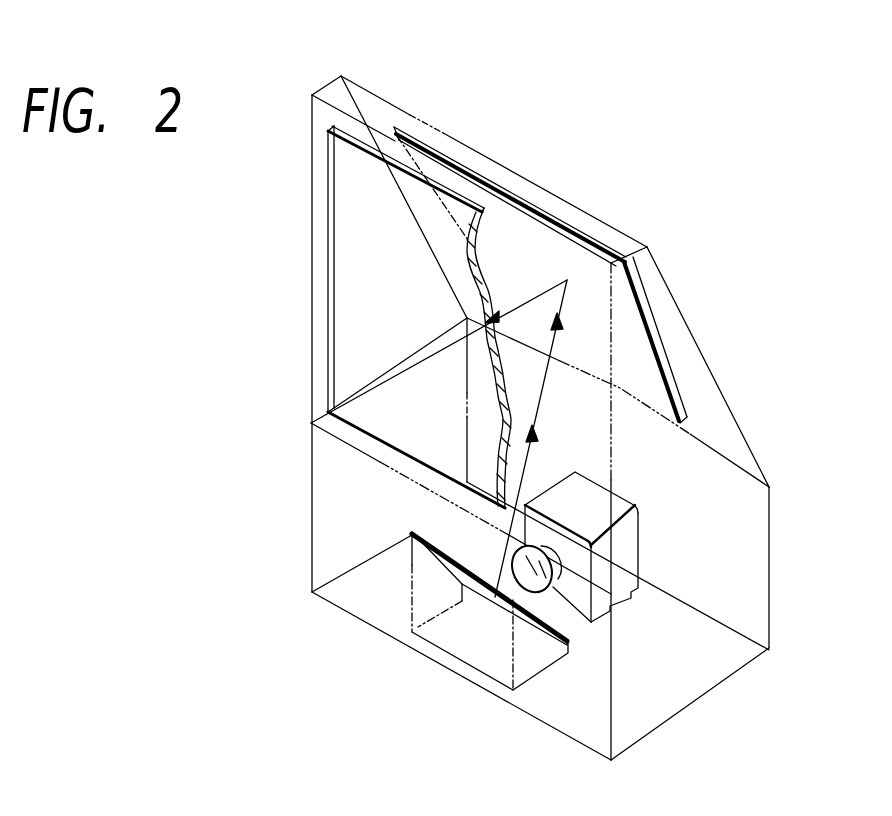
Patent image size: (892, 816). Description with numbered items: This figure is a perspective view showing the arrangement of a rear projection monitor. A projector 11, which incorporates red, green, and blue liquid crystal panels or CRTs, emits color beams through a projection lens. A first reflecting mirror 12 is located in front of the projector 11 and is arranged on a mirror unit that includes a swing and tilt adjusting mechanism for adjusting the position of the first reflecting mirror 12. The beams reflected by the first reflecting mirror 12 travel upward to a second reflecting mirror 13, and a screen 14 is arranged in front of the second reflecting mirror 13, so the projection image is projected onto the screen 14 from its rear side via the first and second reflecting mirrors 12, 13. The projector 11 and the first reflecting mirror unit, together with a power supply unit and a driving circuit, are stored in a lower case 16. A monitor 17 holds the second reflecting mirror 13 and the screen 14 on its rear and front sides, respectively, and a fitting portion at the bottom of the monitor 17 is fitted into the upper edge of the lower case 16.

The projector 11 is at (631, 532).
The first reflecting mirror 12 is at (443, 560).
The second reflecting mirror 13 is at (652, 346).
The screen 14 is at (345, 195).
The lower case 16 is at (520, 708).
The monitor 17 is at (601, 218).